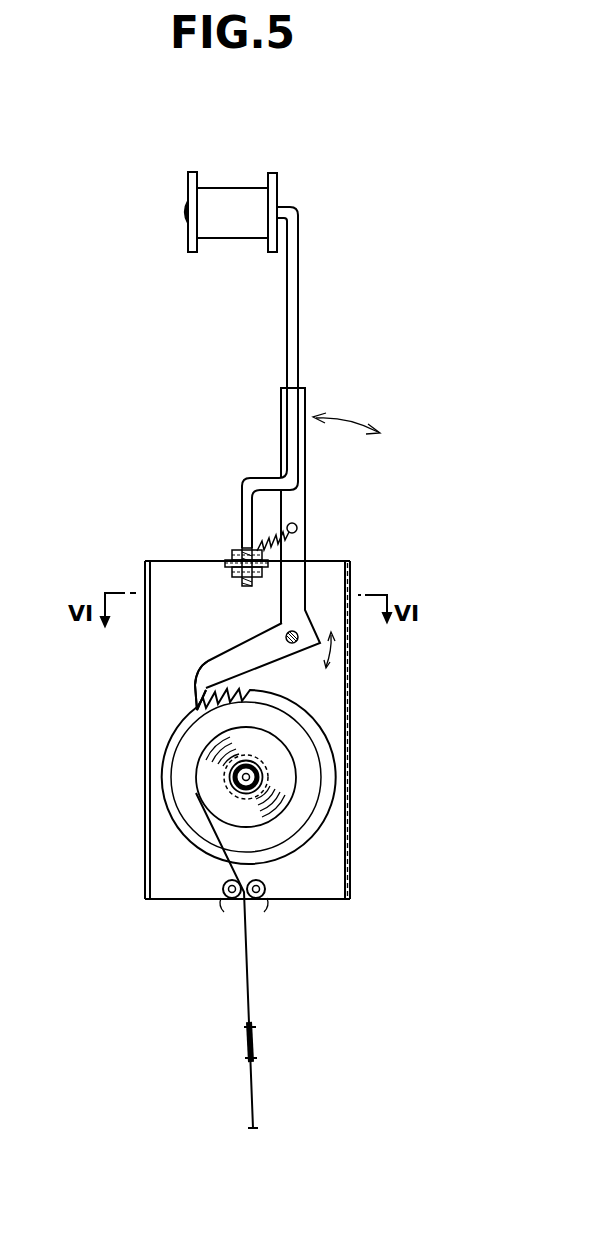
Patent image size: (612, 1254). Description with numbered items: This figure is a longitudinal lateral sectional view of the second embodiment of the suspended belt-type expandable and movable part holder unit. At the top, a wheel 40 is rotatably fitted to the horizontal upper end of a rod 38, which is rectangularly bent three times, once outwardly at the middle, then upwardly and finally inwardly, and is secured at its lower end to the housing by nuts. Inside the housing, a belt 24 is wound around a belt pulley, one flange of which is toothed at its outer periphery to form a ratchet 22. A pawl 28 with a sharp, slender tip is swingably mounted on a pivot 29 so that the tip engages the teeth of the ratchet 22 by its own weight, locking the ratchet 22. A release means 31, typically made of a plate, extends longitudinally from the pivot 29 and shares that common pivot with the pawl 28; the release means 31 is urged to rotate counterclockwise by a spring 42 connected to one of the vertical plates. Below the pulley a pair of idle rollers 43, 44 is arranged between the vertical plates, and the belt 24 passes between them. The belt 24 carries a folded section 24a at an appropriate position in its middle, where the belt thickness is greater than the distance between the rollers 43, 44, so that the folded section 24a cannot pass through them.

The wheel 40 is at (278, 180).
The rod 38 is at (298, 328).
The release means 31 is at (306, 500).
The spring 42 is at (278, 553).
The pivot 29 is at (283, 626).
The pawl 28 is at (207, 661).
The ratchet 22 is at (184, 717).
The belt 24 is at (196, 793).
The idle roller 43 is at (226, 903).
The idle roller 44 is at (262, 903).
The folded section 24a is at (247, 1043).